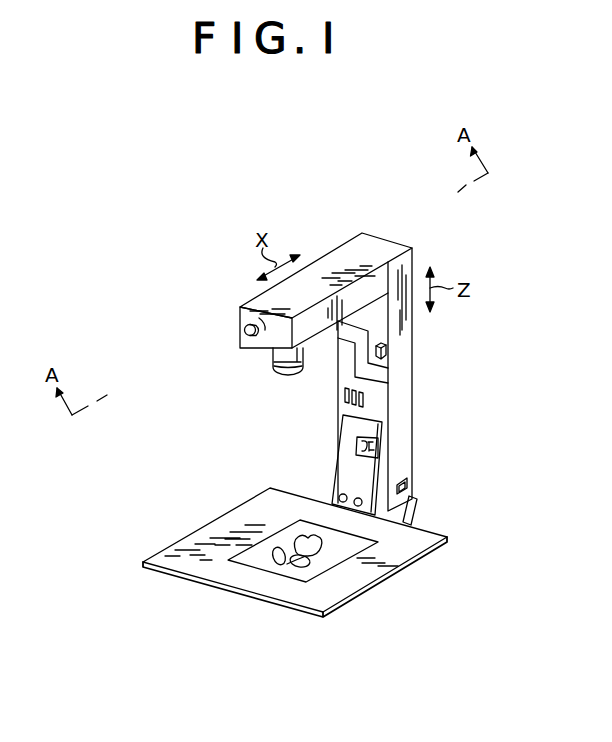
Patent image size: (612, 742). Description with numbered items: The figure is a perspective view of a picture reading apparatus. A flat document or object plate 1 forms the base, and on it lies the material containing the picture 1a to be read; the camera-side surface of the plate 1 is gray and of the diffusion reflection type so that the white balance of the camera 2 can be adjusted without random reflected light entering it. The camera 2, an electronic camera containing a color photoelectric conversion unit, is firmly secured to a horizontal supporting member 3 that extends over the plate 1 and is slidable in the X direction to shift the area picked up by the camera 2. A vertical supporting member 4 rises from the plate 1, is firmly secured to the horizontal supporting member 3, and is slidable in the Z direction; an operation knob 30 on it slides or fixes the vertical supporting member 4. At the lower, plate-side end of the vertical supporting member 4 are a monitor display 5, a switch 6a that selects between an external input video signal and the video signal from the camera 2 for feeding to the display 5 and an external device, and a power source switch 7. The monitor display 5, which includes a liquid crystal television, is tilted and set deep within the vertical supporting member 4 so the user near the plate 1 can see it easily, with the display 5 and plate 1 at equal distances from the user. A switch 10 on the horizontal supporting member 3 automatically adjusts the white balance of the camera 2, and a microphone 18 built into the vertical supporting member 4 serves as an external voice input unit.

The document plate 1 is at (312, 598).
The picture 1a is at (256, 562).
The camera 2 is at (282, 374).
The horizontal supporting member 3 is at (318, 278).
The vertical supporting member 4 is at (413, 336).
The monitor display 5 is at (378, 440).
The switch 6a is at (361, 506).
The power source switch 7 is at (409, 487).
The switch 10 is at (247, 335).
The microphone 18 is at (345, 392).
The operation knob 30 is at (386, 351).